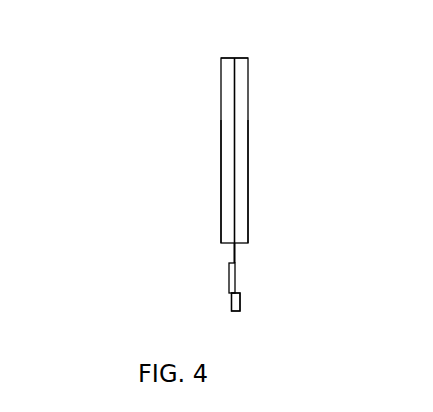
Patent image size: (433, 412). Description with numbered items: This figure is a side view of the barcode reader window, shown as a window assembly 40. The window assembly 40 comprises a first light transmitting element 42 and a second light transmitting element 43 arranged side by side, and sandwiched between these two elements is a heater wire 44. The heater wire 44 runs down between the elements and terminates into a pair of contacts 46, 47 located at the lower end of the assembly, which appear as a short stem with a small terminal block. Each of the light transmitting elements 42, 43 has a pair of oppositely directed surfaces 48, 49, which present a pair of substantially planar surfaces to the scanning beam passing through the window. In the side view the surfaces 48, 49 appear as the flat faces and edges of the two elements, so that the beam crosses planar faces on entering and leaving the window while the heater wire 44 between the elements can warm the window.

The window assembly 40 is at (126, 62).
The first light transmitting element 42 is at (228, 210).
The second light transmitting element 43 is at (243, 209).
The heater wire 44 is at (237, 257).
The contact 46 is at (229, 284).
The contact 47 is at (236, 302).
The surface 48 is at (222, 155).
The surface 49 is at (233, 108).